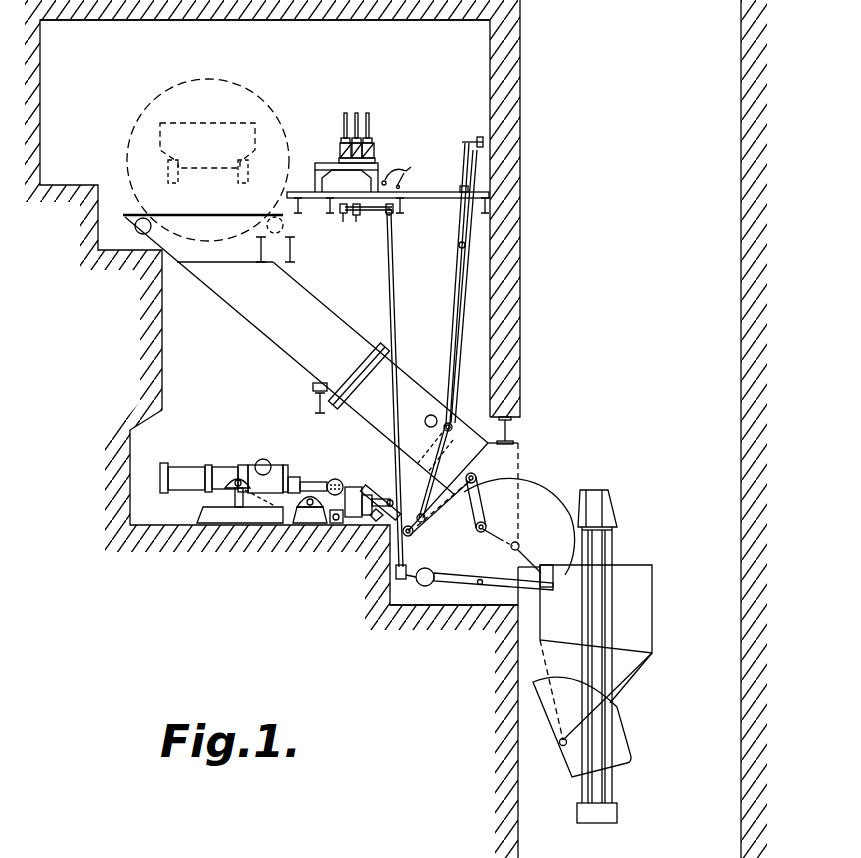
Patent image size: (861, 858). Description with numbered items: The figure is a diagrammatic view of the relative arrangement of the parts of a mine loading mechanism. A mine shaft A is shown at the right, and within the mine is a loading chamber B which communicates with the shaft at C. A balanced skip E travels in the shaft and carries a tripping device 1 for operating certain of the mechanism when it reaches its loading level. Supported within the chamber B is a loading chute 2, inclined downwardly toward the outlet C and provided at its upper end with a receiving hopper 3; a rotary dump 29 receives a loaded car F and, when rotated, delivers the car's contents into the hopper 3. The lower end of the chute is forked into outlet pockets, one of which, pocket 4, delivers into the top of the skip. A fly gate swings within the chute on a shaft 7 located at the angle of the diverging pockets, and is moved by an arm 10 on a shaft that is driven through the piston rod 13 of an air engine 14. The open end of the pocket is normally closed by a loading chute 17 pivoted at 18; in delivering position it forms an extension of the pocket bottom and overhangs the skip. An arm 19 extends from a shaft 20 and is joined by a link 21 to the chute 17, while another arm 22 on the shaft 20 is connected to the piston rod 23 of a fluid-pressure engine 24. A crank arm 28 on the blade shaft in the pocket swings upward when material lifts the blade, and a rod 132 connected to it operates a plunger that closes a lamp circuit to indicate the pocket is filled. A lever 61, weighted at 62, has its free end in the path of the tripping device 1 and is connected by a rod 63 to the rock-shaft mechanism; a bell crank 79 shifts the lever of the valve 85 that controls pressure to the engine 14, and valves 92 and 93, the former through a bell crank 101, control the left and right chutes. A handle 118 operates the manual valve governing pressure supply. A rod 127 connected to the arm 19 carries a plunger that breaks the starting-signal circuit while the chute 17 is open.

The tripping device 1 is at (551, 560).
The loading chute 2 is at (272, 326).
The receiving hopper 3 is at (193, 254).
The outlet pocket 4 is at (515, 476).
The shaft 7 is at (451, 421).
The arm 10 is at (348, 532).
The piston rod 13 is at (318, 484).
The air engine 14 is at (250, 465).
The loading chute 17 is at (545, 506).
The pivot 18 is at (511, 548).
The arm 19 is at (448, 503).
The shaft 20 is at (412, 535).
The link 21 is at (483, 490).
The arm 22 is at (382, 533).
The piston rod 23 is at (377, 497).
The engine 24 is at (348, 485).
The crank arm 28 is at (440, 432).
The rotary dump 29 is at (258, 98).
The lever 61 is at (443, 584).
The weight 62 is at (418, 580).
The rod 63 is at (397, 292).
The bell crank 79 is at (344, 221).
The valve 85 is at (340, 141).
The valve 92 is at (358, 139).
The valve 93 is at (372, 143).
The bell crank 101 is at (356, 223).
The handle 118 is at (410, 171).
The rod 127 is at (449, 318).
The rod 132 is at (455, 377).
The mine shaft A is at (681, 429).
The loading chamber B is at (265, 56).
The outlet C is at (517, 597).
The skip E is at (643, 618).
The loaded car F is at (160, 130).